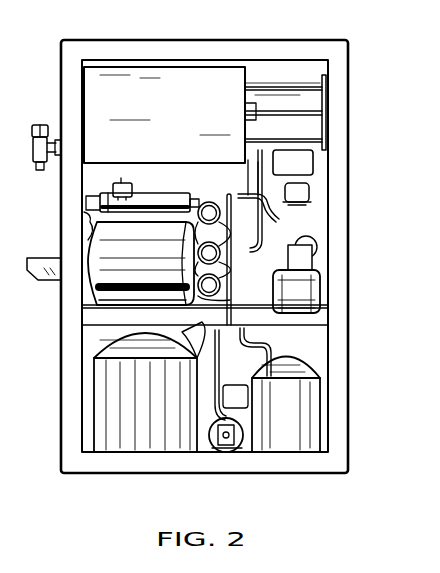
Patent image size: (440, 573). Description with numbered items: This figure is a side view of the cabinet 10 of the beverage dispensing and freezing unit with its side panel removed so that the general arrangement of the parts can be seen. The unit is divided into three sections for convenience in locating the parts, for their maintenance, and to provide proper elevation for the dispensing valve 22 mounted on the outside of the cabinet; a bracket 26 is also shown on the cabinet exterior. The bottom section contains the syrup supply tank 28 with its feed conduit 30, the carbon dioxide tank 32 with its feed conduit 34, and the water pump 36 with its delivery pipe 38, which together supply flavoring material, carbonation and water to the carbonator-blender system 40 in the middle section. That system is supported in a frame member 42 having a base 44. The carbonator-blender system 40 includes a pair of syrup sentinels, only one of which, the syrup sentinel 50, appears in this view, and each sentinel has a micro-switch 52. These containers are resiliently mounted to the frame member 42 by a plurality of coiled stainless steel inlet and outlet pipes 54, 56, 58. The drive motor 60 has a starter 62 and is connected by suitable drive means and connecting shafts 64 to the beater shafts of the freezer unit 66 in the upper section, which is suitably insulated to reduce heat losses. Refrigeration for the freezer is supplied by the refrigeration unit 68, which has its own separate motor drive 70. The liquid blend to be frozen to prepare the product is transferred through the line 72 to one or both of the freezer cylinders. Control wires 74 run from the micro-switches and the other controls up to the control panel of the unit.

The cabinet 10 is at (352, 68).
The dispensing valve 22 is at (40, 125).
The drip tray bracket 26 is at (44, 262).
The syrup supply tank 28 is at (305, 435).
The feed conduit 30 is at (271, 345).
The carbon dioxide tank 32 is at (122, 445).
The feed conduit 34 is at (178, 345).
The water pump 36 is at (243, 458).
The delivery pipe 38 is at (217, 367).
The carbonator-blender system 40 is at (120, 261).
The frame member 42 is at (272, 213).
The base 44 is at (100, 315).
The syrup sentinel 50 is at (166, 195).
The micro-switch 52 is at (122, 183).
The coiled stainless steel inlet and outlet pipe 54 is at (196, 199).
The coiled stainless steel inlet and outlet pipe 56 is at (212, 243).
The coiled stainless steel inlet and outlet pipe 58 is at (222, 284).
The drive motor 60 is at (305, 300).
The starter 62 is at (305, 262).
The drive means and connecting shafts 64 is at (298, 113).
The freezer unit 66 is at (168, 82).
The refrigeration unit 68 is at (300, 153).
The motor drive 70 is at (308, 201).
The line 72 is at (256, 172).
The control wires 74 is at (84, 212).